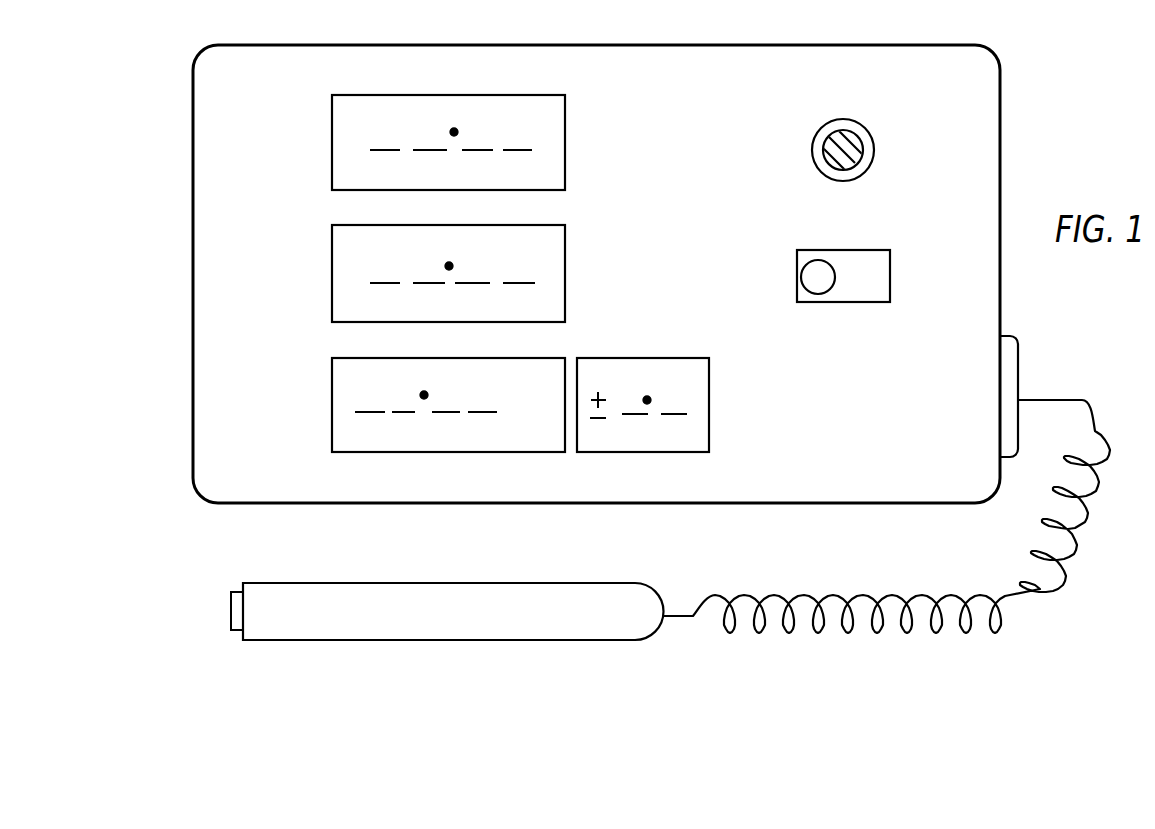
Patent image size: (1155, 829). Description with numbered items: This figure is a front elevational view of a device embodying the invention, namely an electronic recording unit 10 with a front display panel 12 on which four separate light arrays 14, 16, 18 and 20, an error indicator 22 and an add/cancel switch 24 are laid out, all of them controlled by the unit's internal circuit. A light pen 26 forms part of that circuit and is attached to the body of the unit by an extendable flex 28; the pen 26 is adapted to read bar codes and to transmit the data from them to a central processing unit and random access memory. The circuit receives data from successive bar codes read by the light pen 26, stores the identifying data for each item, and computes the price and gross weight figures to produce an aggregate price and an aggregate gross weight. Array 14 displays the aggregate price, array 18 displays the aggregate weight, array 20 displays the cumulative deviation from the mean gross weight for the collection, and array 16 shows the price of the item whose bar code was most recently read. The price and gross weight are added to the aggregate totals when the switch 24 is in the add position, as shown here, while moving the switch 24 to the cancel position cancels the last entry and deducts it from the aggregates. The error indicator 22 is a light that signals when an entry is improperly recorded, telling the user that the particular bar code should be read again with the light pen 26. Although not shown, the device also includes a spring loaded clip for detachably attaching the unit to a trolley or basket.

The electronic recording unit 10 is at (172, 87).
The front display panel 12 is at (208, 164).
The light array 14 is at (430, 95).
The light array 16 is at (332, 310).
The light array 18 is at (443, 447).
The light array 20 is at (633, 447).
The error indicator 22 is at (875, 140).
The add/cancel switch 24 is at (843, 304).
The light pen 26 is at (500, 589).
The extendable flex 28 is at (1082, 515).